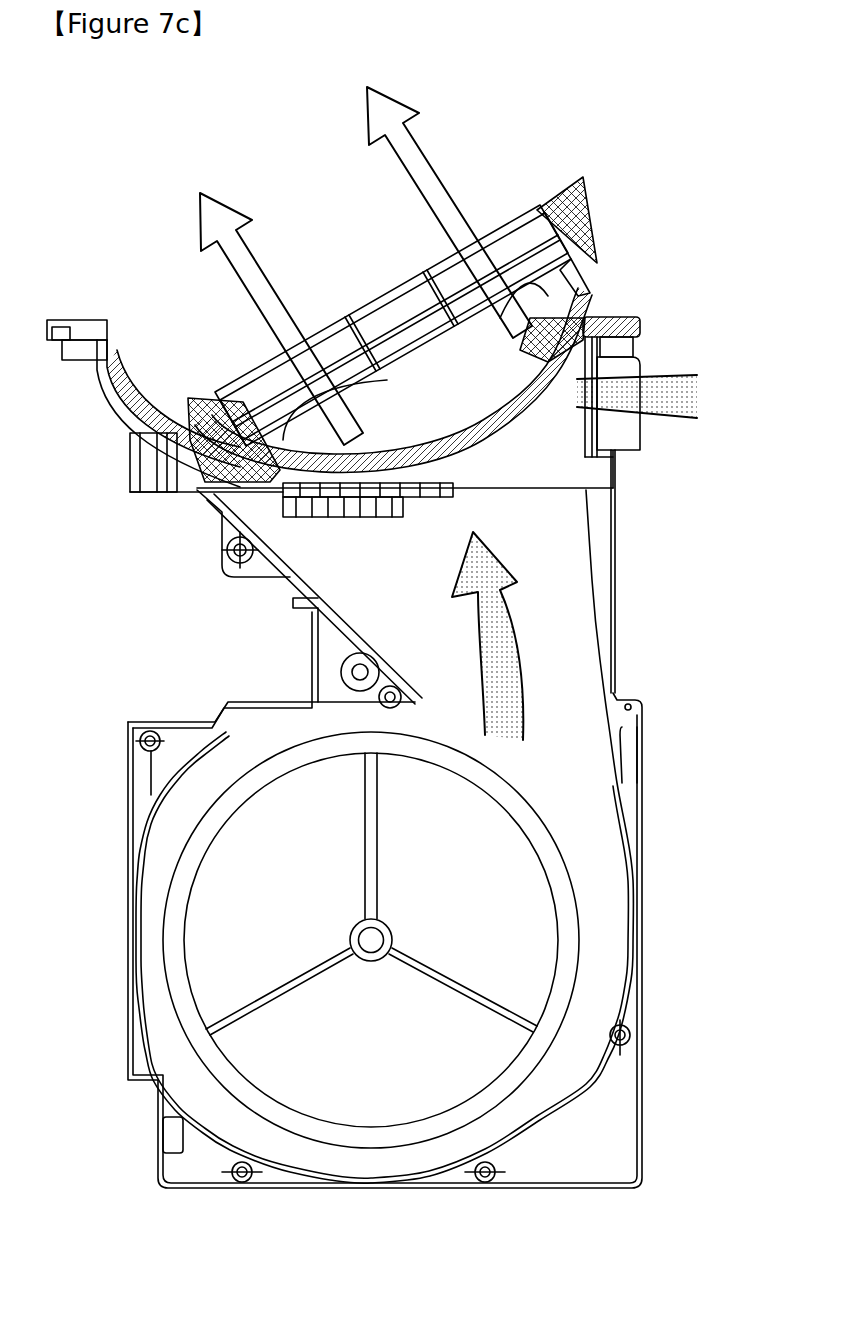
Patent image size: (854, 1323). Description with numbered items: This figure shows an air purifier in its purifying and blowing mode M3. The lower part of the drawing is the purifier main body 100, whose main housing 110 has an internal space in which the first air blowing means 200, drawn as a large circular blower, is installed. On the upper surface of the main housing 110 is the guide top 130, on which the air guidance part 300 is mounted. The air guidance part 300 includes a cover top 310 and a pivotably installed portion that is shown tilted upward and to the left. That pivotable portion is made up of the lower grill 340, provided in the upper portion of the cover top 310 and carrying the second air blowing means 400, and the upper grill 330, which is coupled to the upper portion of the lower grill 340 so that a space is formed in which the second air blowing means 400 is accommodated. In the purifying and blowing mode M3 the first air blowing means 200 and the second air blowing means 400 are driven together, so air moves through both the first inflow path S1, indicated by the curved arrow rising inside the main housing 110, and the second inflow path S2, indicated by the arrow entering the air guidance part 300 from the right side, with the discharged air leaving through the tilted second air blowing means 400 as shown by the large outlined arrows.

The purifier main body 100 is at (446, 589).
The main housing 110 is at (620, 567).
The guide top 130 is at (620, 433).
The first air blowing means 200 is at (555, 806).
The air guidance part 300 is at (360, 283).
The cover top 310 is at (620, 312).
The upper grill 330 is at (555, 205).
The lower grill 340 is at (578, 258).
The second air blowing means 400 is at (347, 323).
The first inflow path S1 is at (525, 647).
The second inflow path S2 is at (670, 380).
The purifying and blowing mode M3 is at (408, 1233).